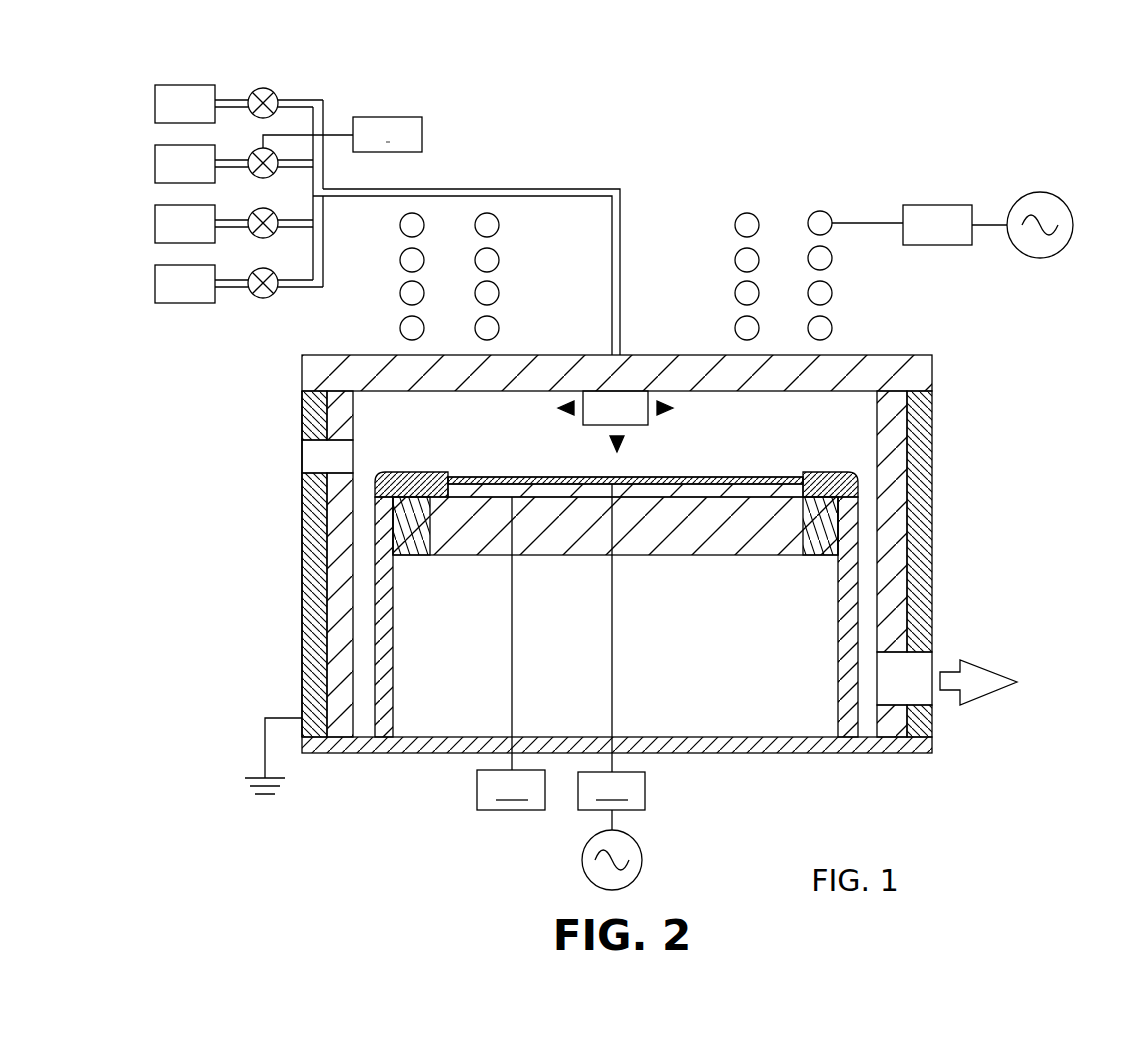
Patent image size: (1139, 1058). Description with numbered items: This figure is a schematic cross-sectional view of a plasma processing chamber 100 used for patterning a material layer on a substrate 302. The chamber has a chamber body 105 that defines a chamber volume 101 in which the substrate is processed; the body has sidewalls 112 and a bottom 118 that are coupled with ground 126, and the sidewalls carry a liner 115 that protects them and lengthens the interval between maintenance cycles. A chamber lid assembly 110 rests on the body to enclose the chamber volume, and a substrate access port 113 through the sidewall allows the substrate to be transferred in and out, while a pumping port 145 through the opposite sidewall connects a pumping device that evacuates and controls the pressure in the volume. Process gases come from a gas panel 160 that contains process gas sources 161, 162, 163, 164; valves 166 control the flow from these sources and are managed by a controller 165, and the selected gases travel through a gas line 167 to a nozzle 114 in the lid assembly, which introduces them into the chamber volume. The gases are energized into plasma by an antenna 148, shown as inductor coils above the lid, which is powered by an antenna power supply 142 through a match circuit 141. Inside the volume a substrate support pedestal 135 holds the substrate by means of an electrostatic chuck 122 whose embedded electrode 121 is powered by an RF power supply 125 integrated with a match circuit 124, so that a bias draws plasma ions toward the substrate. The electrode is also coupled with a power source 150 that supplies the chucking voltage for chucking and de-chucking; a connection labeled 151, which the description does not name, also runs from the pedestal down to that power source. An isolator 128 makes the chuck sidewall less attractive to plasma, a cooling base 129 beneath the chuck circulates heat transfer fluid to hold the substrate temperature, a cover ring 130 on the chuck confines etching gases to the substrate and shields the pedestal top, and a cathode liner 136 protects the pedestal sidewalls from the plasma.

The plasma processing chamber 100 is at (660, 549).
The chamber volume 101 is at (753, 436).
The chamber body 105 is at (932, 422).
The chamber lid assembly 110 is at (880, 355).
The sidewalls 112 is at (932, 497).
The substrate access port 113 is at (302, 455).
The nozzle 114 is at (648, 425).
The liner 115 is at (330, 580).
The bottom 118 is at (758, 753).
The electrode 121 is at (642, 497).
The electrostatic chuck 122 is at (580, 477).
The match circuit 124 is at (611, 791).
The RF power supply 125 is at (645, 855).
The ground 126 is at (265, 750).
The isolator 128 is at (405, 557).
The cooling base 129 is at (705, 540).
The cover ring 130 is at (828, 470).
The substrate support pedestal 135 is at (538, 679).
The cathode liner 136 is at (838, 668).
The match circuit 141 is at (925, 205).
The antenna power supply 142 is at (1060, 197).
The pumping port 145 is at (932, 692).
The antenna 148 is at (745, 213).
The power source 150 is at (511, 790).
The heater line 151 is at (543, 497).
The gas panel 160 is at (248, 166).
The process gas source 161 is at (155, 100).
The process gas source 162 is at (155, 160).
The process gas source 163 is at (155, 220).
The process gas source 164 is at (155, 280).
The controller 165 is at (342, 134).
The valves 166 is at (268, 178).
The gas line 167 is at (520, 189).
The substrate 302 is at (514, 472).